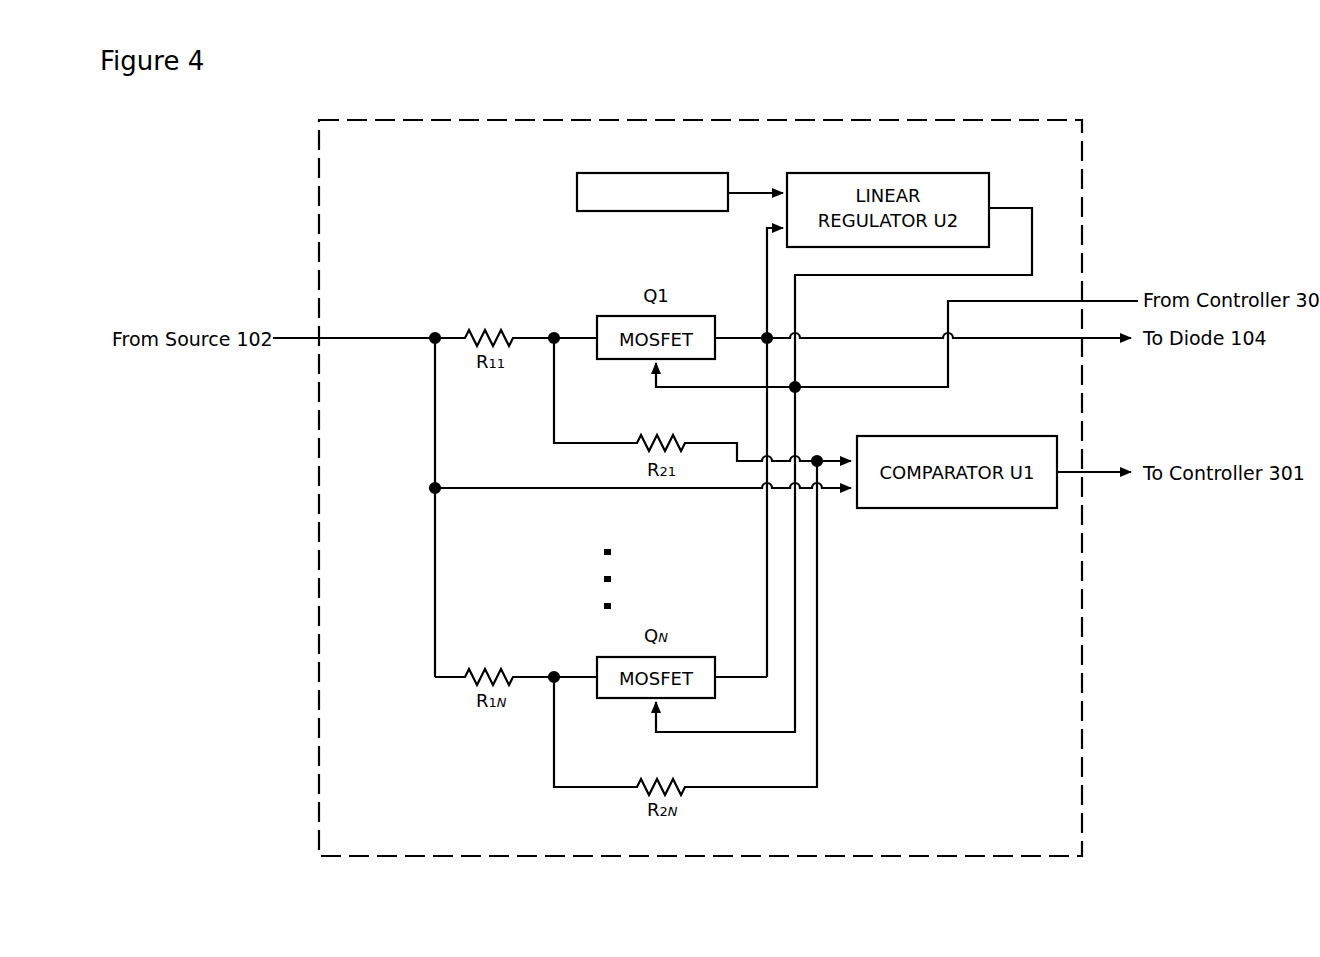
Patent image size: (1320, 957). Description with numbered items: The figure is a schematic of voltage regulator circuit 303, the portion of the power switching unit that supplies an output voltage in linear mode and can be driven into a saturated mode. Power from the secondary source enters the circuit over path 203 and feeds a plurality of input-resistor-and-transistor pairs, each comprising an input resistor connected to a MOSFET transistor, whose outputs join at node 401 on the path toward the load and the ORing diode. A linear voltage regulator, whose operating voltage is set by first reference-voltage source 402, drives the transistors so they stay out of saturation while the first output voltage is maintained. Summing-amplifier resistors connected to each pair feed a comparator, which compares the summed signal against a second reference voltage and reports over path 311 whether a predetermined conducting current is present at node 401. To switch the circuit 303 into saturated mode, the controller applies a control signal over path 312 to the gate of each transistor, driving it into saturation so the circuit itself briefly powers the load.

The path 203 is at (299, 338).
The voltage regulator circuit 303 is at (700, 488).
The path 311 is at (1098, 472).
The path 312 is at (1102, 301).
The node 401 is at (767, 338).
The first reference-voltage source 402 is at (692, 173).